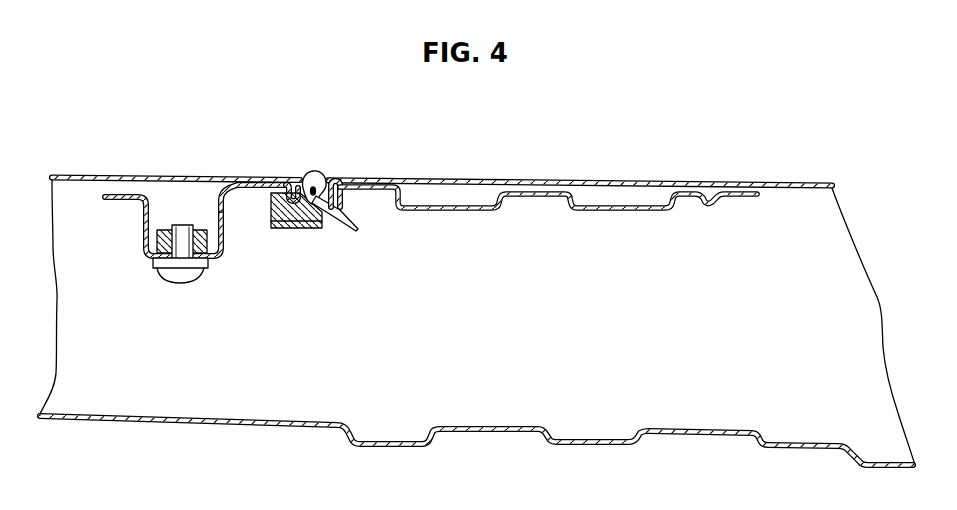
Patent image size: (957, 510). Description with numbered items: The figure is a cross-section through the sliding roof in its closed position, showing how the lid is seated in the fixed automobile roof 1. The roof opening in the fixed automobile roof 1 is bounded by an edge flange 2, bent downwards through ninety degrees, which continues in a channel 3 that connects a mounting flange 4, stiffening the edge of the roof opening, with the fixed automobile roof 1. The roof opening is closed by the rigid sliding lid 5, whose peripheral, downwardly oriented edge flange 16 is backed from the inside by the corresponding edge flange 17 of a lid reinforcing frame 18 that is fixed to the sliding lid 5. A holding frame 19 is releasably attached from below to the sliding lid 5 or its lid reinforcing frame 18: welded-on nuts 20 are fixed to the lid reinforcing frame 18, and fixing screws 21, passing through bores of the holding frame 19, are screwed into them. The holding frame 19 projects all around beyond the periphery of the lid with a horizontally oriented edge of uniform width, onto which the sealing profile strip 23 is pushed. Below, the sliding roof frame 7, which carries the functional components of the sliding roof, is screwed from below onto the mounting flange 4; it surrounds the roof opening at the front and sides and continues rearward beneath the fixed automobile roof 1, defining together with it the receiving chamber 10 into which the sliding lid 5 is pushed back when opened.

The fixed automobile roof 1 is at (746, 182).
The edge flange 2 is at (310, 176).
The channel 3 is at (342, 199).
The mounting flange 4 is at (450, 210).
The sliding lid 5 is at (95, 175).
The sliding roof frame 7 is at (490, 425).
The receiving chamber 10 is at (477, 322).
The edge flange 16 is at (282, 183).
The edge flange 17 is at (283, 201).
The lid reinforcing frame 18 is at (218, 205).
The holding frame 19 is at (225, 247).
The welded-on nut 20 is at (168, 232).
The fixing screw 21 is at (185, 280).
The sealing profile strip 23 is at (321, 177).